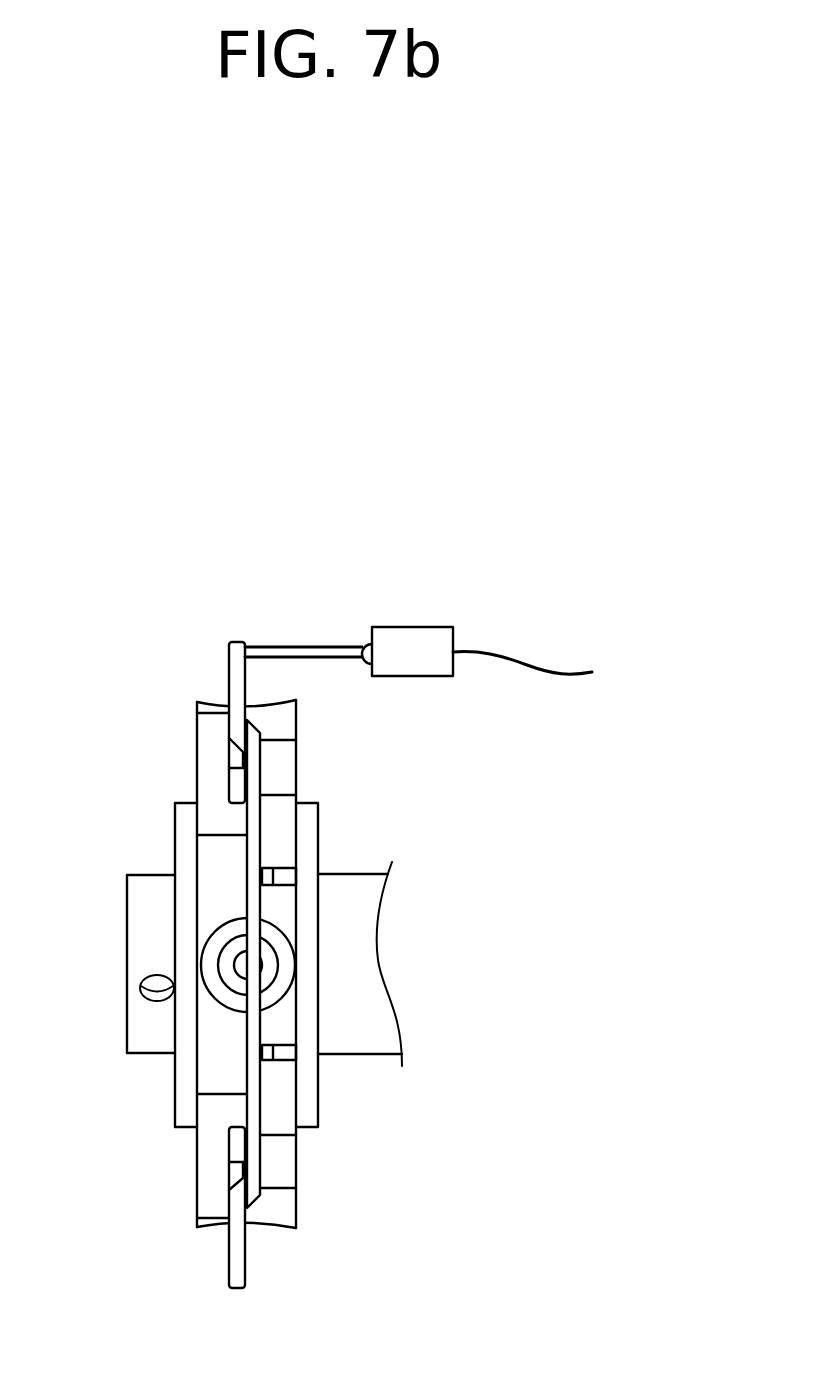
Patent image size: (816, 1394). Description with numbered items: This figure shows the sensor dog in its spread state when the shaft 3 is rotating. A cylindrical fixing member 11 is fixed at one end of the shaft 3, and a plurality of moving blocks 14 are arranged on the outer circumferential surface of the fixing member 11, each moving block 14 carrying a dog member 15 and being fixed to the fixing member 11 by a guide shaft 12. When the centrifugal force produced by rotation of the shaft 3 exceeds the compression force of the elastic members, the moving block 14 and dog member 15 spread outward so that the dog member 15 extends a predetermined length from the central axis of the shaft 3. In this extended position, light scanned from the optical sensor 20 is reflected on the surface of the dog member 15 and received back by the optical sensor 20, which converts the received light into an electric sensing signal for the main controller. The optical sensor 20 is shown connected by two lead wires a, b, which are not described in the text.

The shaft 3 is at (148, 1032).
The fixing member 11 is at (185, 1103).
The guide shaft 12 is at (270, 968).
The moving block 14 is at (215, 861).
The dog member 15 is at (252, 890).
The optical sensor 20 is at (414, 637).
The first lead wire a is at (273, 645).
The second lead wire b is at (332, 660).